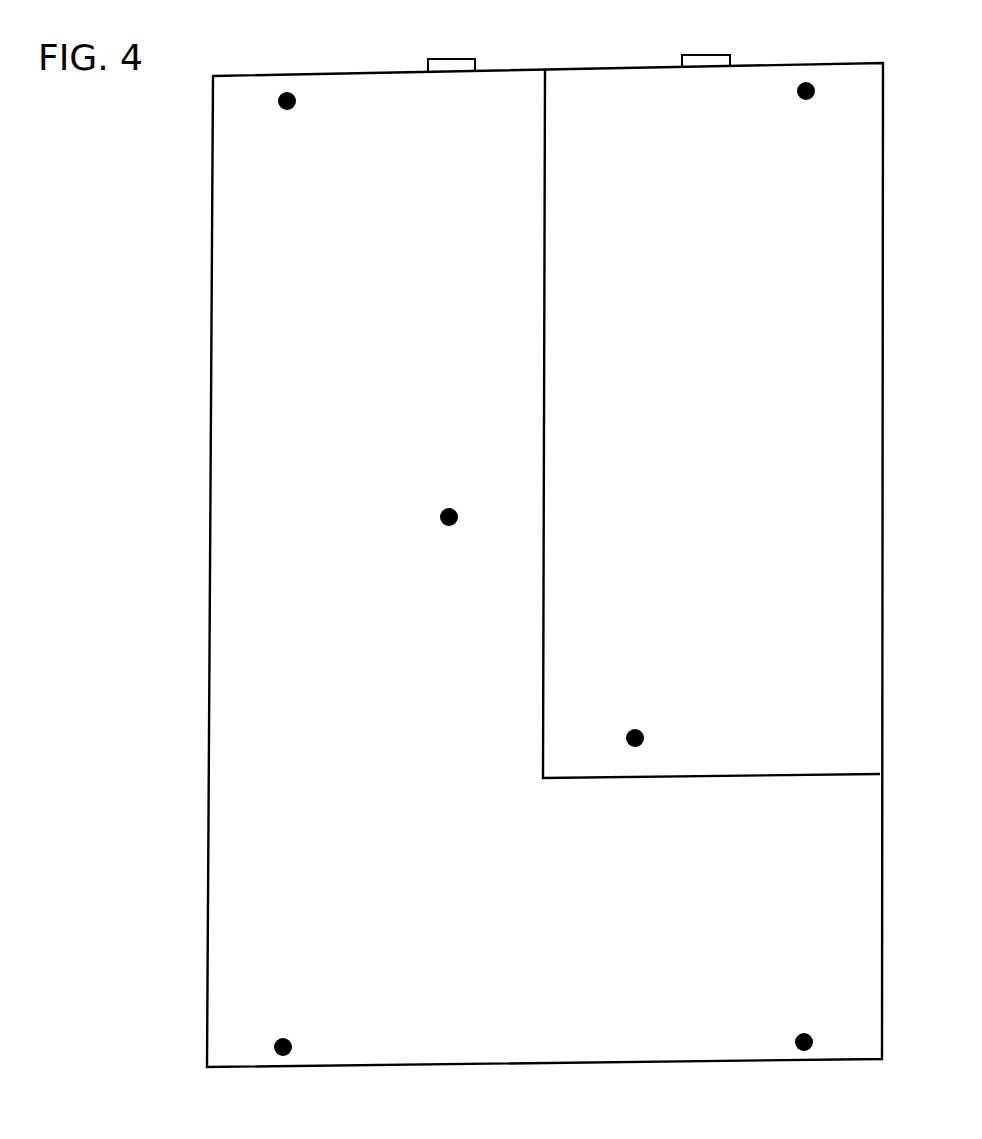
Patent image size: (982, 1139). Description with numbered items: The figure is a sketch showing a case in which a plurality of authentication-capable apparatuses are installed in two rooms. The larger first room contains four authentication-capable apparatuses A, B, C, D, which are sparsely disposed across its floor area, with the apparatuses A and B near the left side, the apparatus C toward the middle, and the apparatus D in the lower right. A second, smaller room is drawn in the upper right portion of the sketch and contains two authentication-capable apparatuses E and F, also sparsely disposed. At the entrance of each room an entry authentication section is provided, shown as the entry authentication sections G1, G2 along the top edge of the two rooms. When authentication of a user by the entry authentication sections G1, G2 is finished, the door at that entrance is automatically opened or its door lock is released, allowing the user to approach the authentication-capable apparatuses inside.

The authentication-capable apparatus A is at (287, 134).
The authentication-capable apparatus B is at (283, 1014).
The authentication-capable apparatus C is at (449, 495).
The authentication-capable apparatus D is at (804, 1009).
The authentication-capable apparatus E is at (806, 124).
The authentication-capable apparatus F is at (633, 718).
The entry authentication section G1 is at (438, 48).
The entry authentication section G2 is at (706, 43).